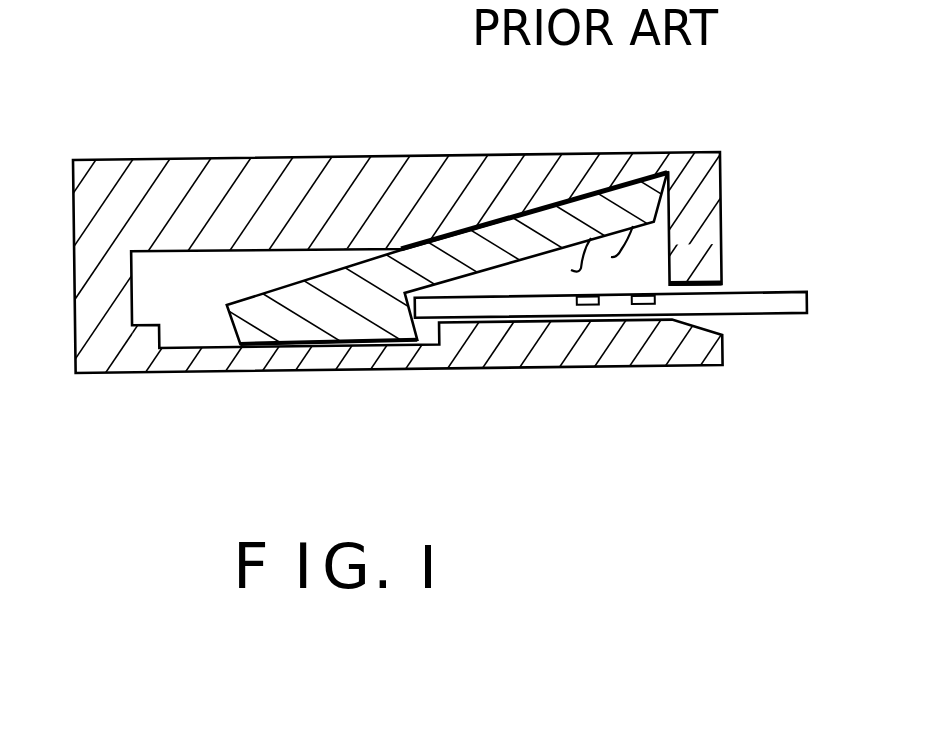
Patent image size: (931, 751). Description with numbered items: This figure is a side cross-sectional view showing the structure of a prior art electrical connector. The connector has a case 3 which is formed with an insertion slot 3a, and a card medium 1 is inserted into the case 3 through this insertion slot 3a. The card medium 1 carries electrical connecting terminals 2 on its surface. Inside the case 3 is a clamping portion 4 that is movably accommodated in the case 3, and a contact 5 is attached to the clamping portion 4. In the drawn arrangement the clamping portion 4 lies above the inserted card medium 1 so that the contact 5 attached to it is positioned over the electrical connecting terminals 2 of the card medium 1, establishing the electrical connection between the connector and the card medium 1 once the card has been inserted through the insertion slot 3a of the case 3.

The card medium 1 is at (767, 315).
The electrical connecting terminals 2 is at (580, 305).
The case 3 is at (327, 160).
The insertion slot 3a is at (727, 285).
The clamping portion 4 is at (342, 327).
The contact 5 is at (574, 257).